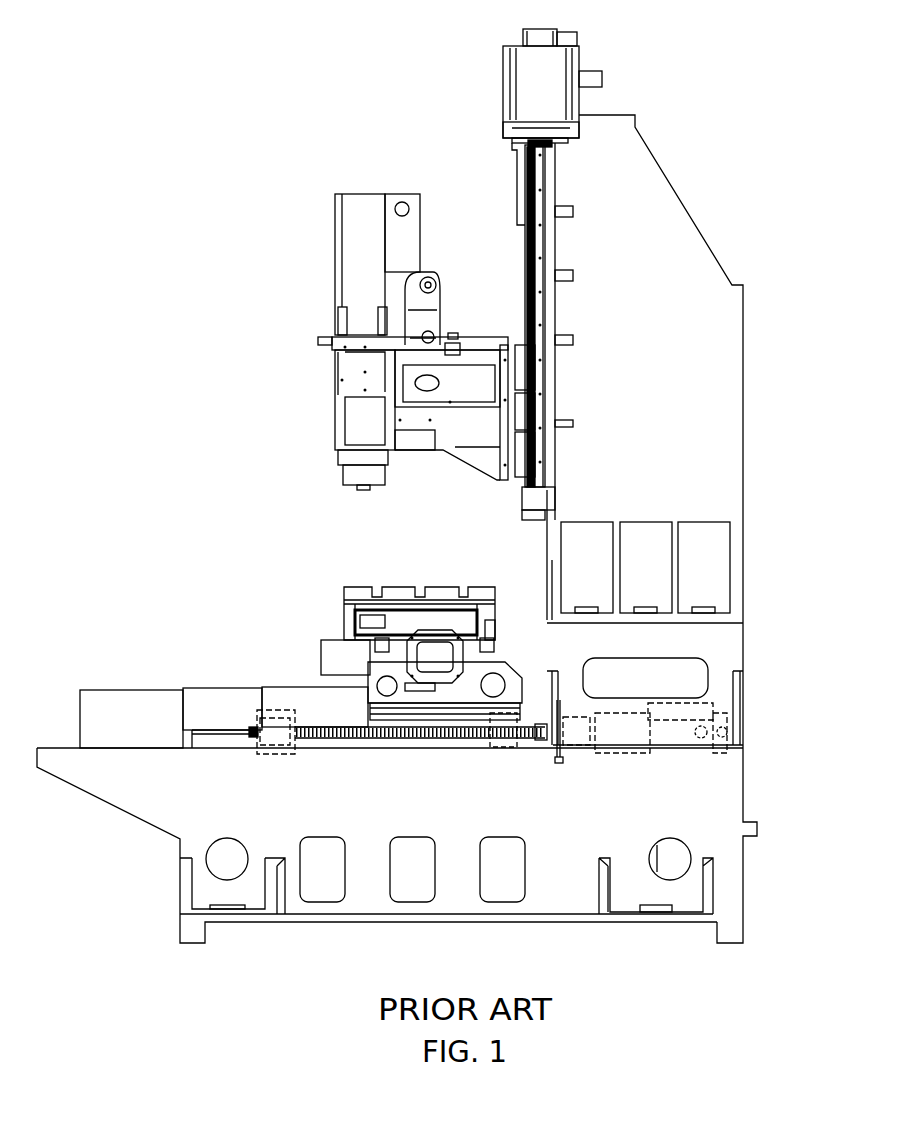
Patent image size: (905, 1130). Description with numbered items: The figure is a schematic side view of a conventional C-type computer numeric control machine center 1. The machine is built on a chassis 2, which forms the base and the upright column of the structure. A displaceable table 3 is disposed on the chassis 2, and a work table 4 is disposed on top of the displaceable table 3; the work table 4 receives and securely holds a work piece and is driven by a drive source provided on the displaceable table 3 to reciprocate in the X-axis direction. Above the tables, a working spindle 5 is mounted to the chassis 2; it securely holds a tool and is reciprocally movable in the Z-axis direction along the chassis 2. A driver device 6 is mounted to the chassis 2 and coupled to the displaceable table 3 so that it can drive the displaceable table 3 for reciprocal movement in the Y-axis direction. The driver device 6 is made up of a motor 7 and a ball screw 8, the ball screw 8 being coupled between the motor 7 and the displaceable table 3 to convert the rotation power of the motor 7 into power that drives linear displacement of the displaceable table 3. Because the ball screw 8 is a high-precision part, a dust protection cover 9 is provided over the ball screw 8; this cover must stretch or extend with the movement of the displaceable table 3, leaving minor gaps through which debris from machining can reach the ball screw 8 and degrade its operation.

The C-type computer numeric control machine center 1 is at (172, 142).
The chassis 2 is at (117, 783).
The displaceable table 3 is at (360, 677).
The work table 4 is at (357, 590).
The working spindle 5 is at (350, 462).
The driver device 6 is at (750, 690).
The motor 7 is at (680, 760).
The ball screw 8 is at (372, 735).
The dust protection cover 9 is at (213, 697).